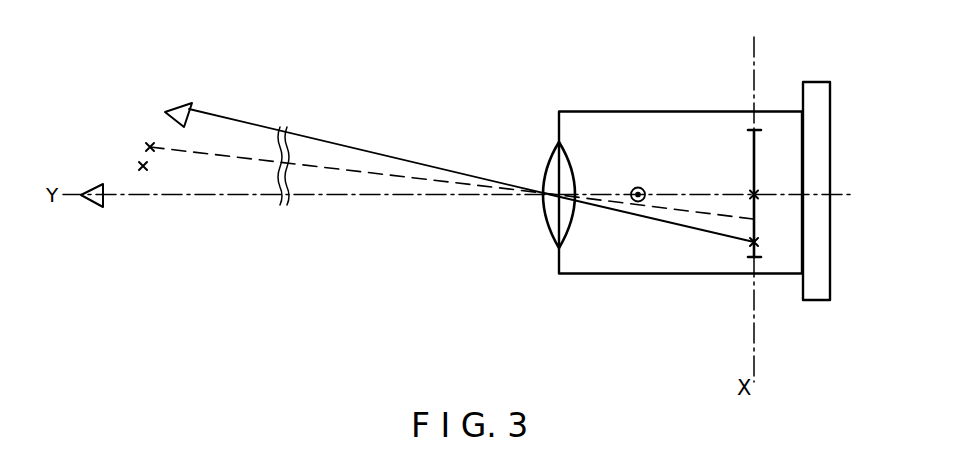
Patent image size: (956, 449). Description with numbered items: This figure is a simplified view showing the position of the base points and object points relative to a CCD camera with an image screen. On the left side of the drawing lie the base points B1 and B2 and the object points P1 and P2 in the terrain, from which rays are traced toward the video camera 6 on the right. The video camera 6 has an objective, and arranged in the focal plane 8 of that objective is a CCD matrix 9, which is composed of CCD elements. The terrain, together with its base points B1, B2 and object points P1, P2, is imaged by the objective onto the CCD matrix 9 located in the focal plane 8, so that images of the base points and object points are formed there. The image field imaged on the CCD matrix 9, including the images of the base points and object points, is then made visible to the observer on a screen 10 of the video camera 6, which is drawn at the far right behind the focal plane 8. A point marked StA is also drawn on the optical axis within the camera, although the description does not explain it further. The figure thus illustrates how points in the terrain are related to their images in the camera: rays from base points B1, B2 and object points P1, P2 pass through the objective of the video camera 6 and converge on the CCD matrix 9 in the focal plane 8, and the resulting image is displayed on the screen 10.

The video camera 6 is at (652, 276).
The focal plane 8 is at (754, 55).
The CCD matrix 9 is at (752, 147).
The screen 10 is at (813, 88).
The base point B1 is at (90, 210).
The base point B2 is at (173, 108).
The object point P1 is at (148, 168).
The object point P2 is at (148, 143).
The aperture stop center StA is at (645, 188).